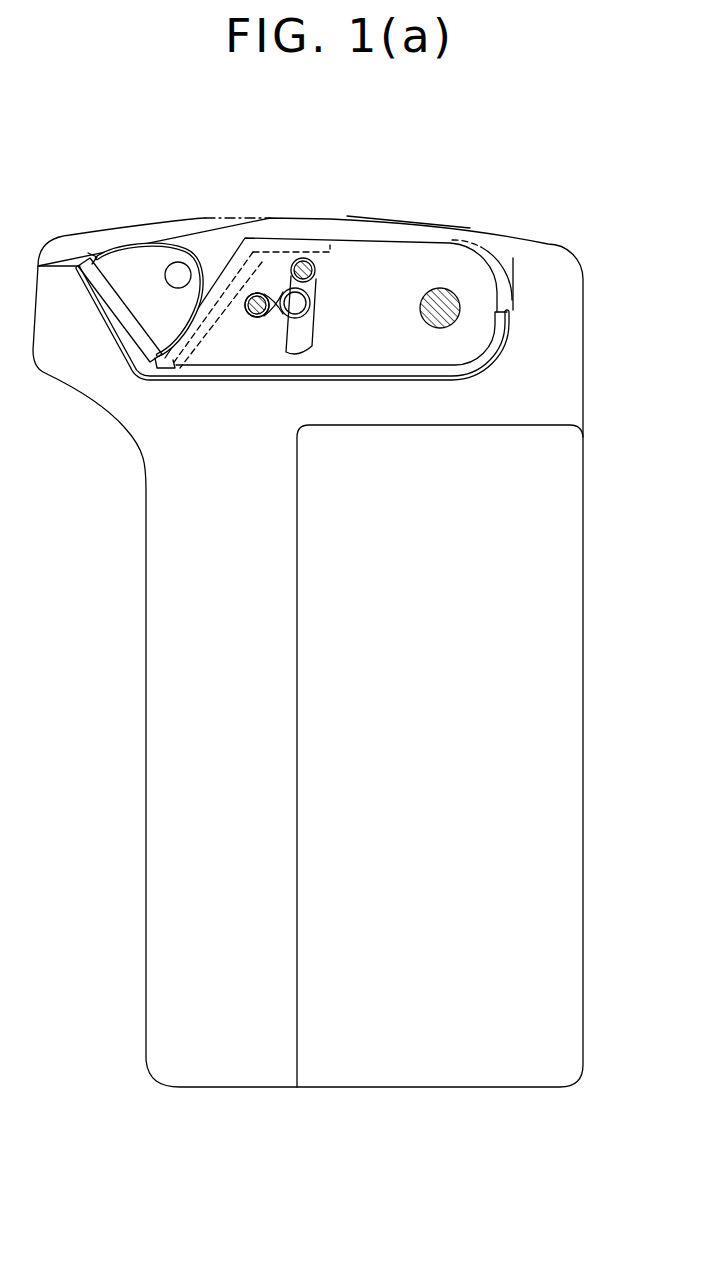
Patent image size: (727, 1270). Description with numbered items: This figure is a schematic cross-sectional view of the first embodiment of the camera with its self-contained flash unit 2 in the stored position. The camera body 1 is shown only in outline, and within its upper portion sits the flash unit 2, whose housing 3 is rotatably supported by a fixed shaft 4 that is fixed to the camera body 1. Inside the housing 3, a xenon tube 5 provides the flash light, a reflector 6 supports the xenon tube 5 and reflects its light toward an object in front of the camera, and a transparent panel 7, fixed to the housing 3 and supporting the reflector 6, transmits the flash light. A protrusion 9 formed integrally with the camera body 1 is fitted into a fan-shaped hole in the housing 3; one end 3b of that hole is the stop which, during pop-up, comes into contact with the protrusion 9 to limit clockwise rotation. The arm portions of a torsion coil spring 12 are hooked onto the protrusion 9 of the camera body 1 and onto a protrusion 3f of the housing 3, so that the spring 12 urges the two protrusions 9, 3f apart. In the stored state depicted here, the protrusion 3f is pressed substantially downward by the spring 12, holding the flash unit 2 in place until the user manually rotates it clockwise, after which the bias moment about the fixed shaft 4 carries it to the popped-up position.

The camera body 1 is at (146, 717).
The flash unit 2 is at (227, 218).
The housing 3 is at (373, 263).
The one end of the fan-shaped hole 3b is at (314, 344).
The protrusion 3f is at (250, 318).
The fixed shaft 4 is at (447, 296).
The xenon tube 5 is at (175, 272).
The reflector 6 is at (138, 243).
The transparent panel 7 is at (85, 253).
The protrusion 9 is at (307, 262).
The torsion coil spring 12 is at (260, 292).